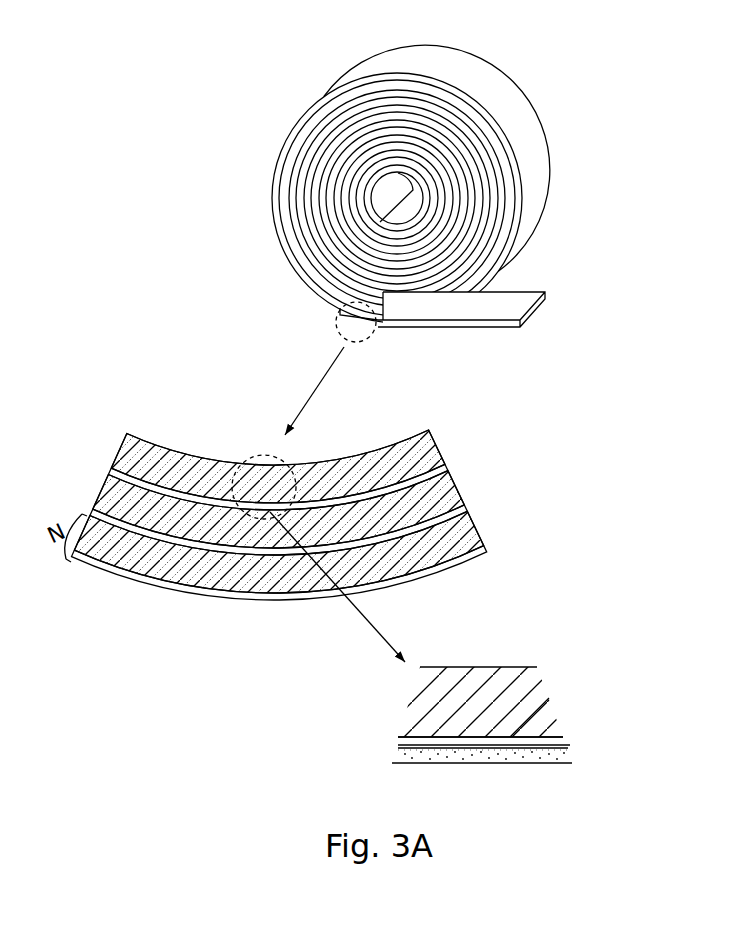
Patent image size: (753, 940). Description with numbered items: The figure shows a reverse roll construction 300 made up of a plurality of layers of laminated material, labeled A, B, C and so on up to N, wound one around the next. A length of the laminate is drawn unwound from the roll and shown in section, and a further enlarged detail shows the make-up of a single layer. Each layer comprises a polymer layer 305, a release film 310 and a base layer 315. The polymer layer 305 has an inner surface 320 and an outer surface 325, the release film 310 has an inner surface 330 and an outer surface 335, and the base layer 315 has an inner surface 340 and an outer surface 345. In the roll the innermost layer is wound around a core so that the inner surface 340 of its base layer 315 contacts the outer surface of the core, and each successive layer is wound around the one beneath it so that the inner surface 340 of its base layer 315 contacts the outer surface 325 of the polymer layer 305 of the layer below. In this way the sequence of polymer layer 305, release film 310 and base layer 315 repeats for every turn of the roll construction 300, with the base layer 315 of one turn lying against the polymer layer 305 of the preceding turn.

The roll construction 300 is at (213, 92).
The polymer layer 305 is at (447, 477).
The release film 310 is at (412, 480).
The base layer 315 is at (328, 476).
The inner surface 320 is at (573, 739).
The outer surface 325 is at (561, 768).
The inner surface 330 is at (398, 735).
The outer surface 335 is at (394, 752).
The inner surface 340 is at (458, 666).
The outer surface 345 is at (532, 731).